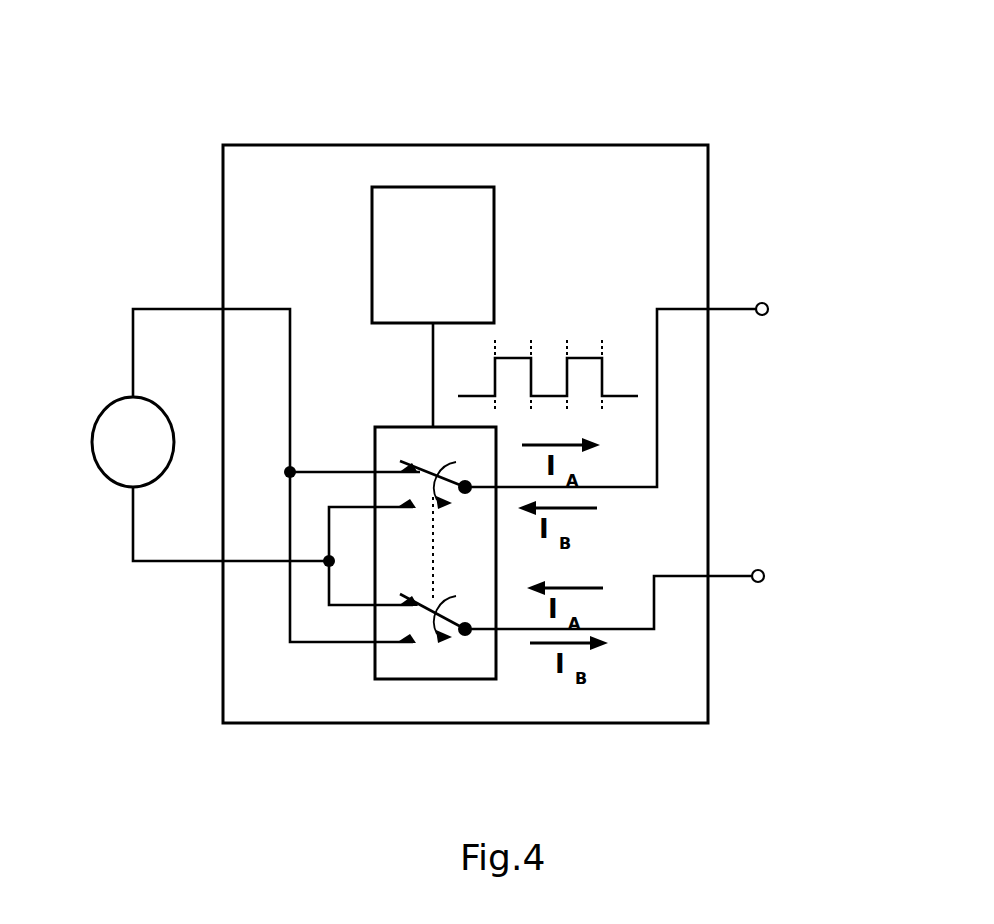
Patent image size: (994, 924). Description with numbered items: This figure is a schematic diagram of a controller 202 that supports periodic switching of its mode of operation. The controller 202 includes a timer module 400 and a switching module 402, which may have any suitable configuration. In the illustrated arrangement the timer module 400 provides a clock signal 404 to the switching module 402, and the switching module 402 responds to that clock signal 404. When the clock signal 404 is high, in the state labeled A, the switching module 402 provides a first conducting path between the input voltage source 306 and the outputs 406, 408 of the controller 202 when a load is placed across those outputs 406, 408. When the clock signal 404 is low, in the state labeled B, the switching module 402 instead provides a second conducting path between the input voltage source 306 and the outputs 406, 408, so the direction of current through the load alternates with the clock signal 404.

The controller 202 is at (510, 90).
The input voltage source 306 is at (111, 478).
The timer module 400 is at (494, 242).
The switching module 402 is at (394, 427).
The clock signal 404 is at (575, 306).
The output 406 is at (764, 303).
The output 408 is at (760, 570).